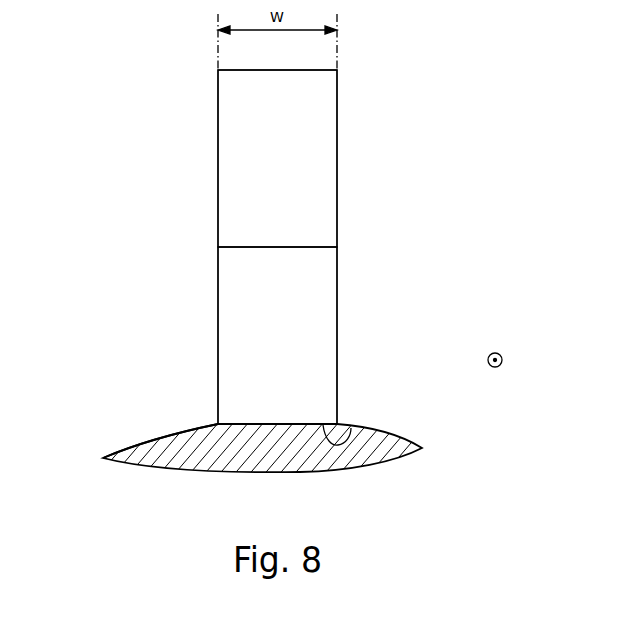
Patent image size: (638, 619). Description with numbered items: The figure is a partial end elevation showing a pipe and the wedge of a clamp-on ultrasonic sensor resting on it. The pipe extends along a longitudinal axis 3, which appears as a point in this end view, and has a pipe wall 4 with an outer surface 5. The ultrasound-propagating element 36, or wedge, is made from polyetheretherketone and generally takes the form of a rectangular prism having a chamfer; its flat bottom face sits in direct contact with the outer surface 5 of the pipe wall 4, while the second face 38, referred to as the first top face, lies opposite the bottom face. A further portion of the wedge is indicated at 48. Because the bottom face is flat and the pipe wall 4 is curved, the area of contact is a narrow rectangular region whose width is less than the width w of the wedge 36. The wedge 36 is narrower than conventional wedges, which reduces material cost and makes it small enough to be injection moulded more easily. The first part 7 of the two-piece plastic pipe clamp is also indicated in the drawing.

The ultrasound-propagating element 36 is at (395, 86).
The second face 38 is at (327, 170).
The lower light guide section 48 is at (327, 334).
The pipe wall 4 is at (392, 457).
The outer surface 5 is at (131, 449).
The first part 7 is at (356, 436).
The longitudinal axis 3 is at (500, 366).